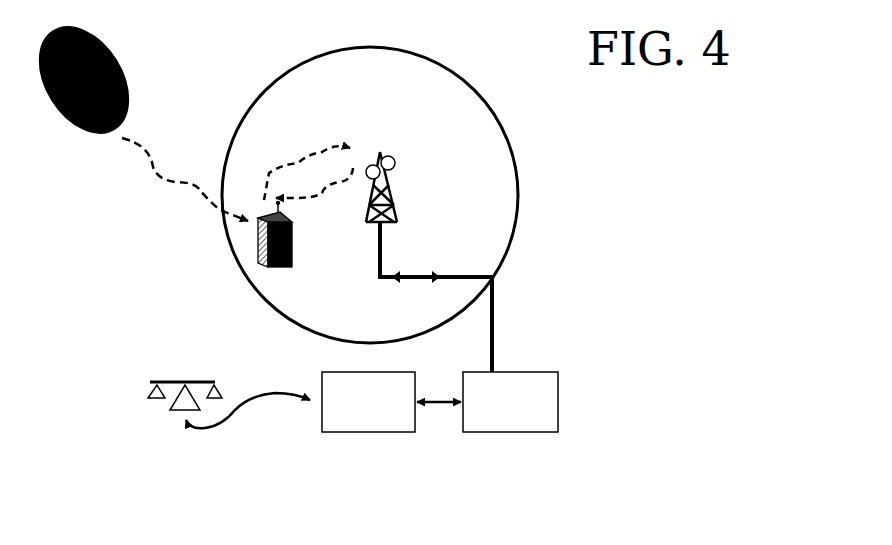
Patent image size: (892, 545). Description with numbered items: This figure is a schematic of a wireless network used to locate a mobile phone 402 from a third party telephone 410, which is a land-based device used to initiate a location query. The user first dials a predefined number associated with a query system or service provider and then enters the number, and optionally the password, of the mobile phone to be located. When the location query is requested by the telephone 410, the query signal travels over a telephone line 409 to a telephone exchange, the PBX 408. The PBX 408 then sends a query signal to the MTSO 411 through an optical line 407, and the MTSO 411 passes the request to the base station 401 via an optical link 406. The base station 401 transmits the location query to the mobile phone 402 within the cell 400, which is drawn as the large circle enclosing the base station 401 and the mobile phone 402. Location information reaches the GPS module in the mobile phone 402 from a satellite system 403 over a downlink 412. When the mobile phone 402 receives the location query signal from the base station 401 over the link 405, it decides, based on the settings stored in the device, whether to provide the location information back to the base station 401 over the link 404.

The cell 400 is at (257, 88).
The base station 401 is at (398, 198).
The mobile phone 402 is at (254, 239).
The satellite system 403 is at (72, 140).
The link 404 is at (307, 159).
The link 405 is at (314, 204).
The optical link 406 is at (416, 295).
The optical line 407 is at (437, 415).
The telephone exchange (PBX) 408 is at (337, 437).
The telephone line 409 is at (270, 438).
The third party telephone 410 is at (195, 370).
The MTSO 411 is at (577, 381).
The downlink 412 is at (173, 203).